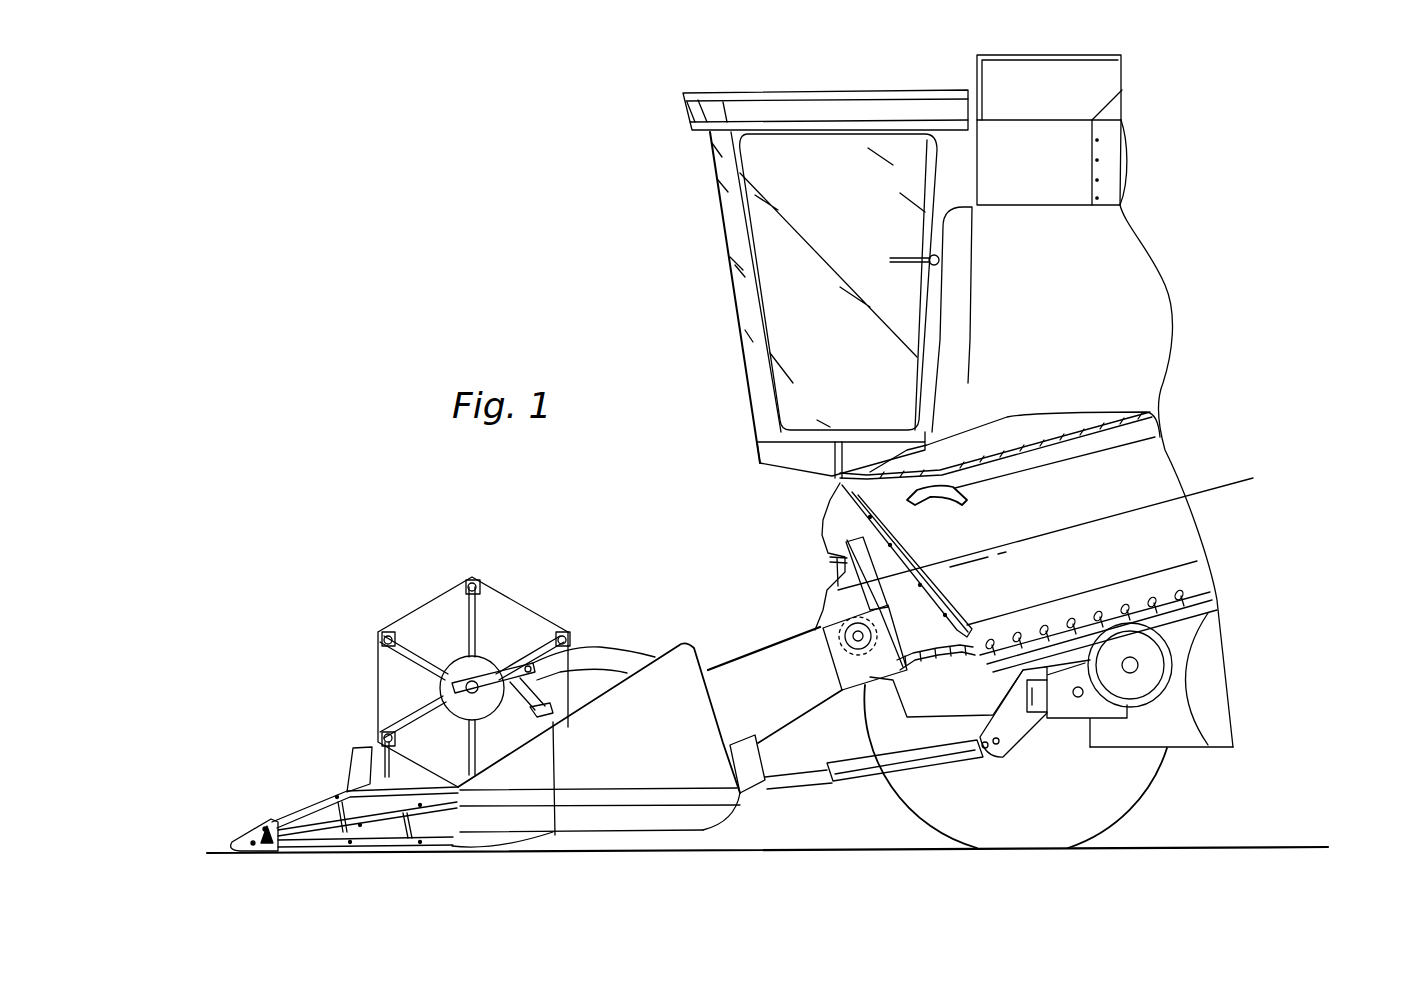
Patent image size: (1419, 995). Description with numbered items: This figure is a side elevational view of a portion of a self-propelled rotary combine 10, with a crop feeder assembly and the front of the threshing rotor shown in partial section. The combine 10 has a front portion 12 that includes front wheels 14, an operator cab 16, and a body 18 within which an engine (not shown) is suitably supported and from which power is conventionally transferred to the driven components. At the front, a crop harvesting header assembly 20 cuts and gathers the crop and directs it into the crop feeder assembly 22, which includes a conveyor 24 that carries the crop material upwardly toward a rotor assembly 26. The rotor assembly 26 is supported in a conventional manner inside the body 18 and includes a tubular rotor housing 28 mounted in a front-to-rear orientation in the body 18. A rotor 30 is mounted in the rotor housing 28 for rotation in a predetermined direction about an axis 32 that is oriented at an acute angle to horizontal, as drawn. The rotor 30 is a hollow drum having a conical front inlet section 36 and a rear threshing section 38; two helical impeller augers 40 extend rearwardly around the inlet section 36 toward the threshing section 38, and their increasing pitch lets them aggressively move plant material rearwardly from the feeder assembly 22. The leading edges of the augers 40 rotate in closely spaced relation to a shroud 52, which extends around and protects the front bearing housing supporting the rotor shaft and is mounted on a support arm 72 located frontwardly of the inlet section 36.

The self-propelled rotary combine 10 is at (1287, 706).
The front portion 12 is at (1200, 752).
The front wheels 14 is at (1148, 803).
The operator cab 16 is at (757, 440).
The body 18 is at (1158, 403).
The crop harvesting header assembly 20 is at (645, 835).
The crop feeder assembly 22 is at (740, 652).
The conveyor 24 is at (822, 614).
The rotor assembly 26 is at (1205, 526).
The tubular rotor housing 28 is at (1090, 420).
The rotor 30 is at (1215, 583).
The axis 32 is at (1197, 493).
The front inlet section 36 is at (900, 540).
The rear threshing section 38 is at (1058, 465).
The helical impeller augers 40 is at (968, 637).
The shroud 52 is at (845, 529).
The support arm 72 is at (812, 555).